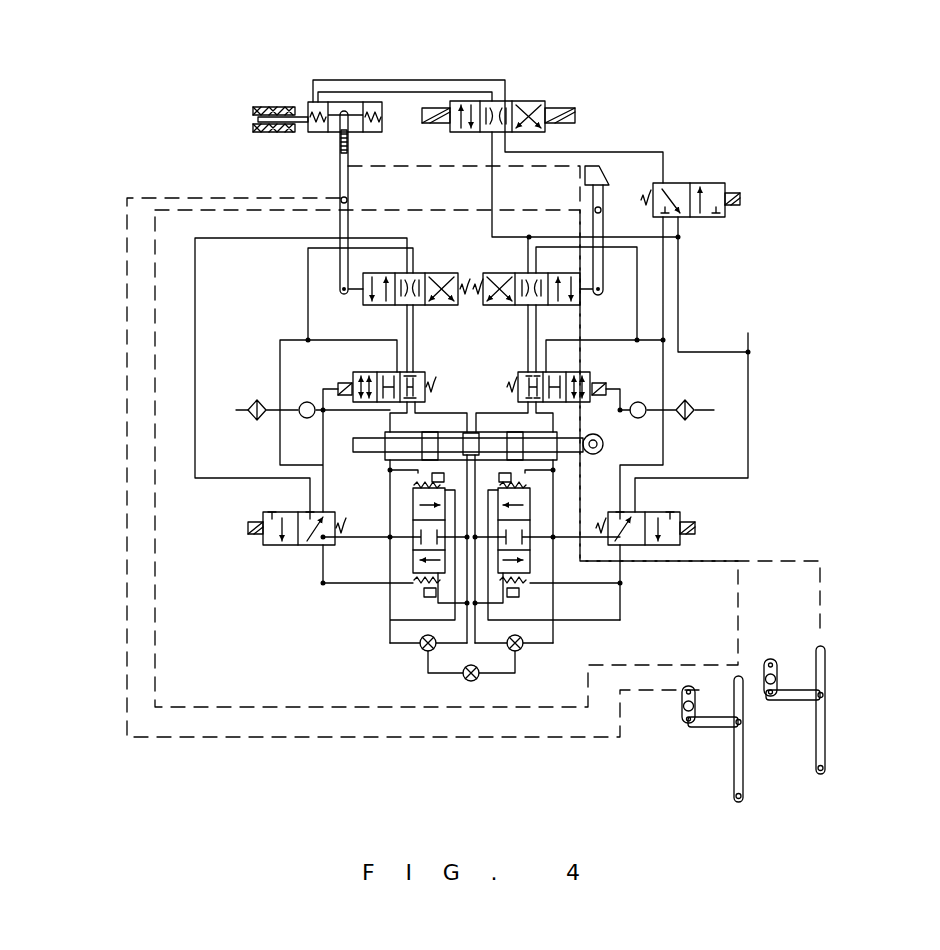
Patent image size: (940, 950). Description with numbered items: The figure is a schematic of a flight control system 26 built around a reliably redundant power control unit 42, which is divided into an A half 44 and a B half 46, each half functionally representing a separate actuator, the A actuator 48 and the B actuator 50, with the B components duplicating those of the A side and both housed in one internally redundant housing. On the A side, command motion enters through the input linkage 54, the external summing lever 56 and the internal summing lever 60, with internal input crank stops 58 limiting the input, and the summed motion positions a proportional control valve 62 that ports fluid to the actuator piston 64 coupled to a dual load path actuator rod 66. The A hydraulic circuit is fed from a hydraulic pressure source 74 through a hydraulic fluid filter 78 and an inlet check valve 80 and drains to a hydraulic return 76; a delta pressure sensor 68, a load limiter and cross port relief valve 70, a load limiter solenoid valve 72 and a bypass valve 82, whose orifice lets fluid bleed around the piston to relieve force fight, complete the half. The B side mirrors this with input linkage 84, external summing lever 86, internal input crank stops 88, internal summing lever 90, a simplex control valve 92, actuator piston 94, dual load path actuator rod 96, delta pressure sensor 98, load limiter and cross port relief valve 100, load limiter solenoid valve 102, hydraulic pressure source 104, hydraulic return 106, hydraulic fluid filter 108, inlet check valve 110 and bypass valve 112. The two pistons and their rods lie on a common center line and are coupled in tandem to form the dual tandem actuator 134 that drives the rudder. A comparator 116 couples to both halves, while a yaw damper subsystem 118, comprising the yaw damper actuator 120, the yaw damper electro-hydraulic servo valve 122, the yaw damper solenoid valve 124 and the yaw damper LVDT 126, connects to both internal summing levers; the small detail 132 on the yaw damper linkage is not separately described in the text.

The hydraulic control system 26 is at (227, 777).
The reliably redundant power control unit 42 is at (157, 757).
The A half 44 is at (117, 685).
The B half 46 is at (840, 648).
The A actuator 48 is at (373, 485).
The B actuator 50 is at (556, 462).
The input linkage 54 is at (710, 730).
The external summing lever 56 is at (733, 762).
The internal input crank stops 58 is at (688, 685).
The internal summing lever 60 is at (340, 225).
The proportional control valve 62 is at (362, 300).
The actuator piston 64 is at (415, 462).
The dual load path actuator rod 66 is at (400, 428).
The delta pressure sensor 68 is at (421, 648).
The load limiter and cross port relief valve 70 is at (413, 562).
The load limiter solenoid valve 72 is at (263, 543).
The hydraulic pressure source 74 is at (222, 393).
The hydraulic return 76 is at (182, 325).
The hydraulic fluid filter 78 is at (258, 398).
The inlet check valve 80 is at (303, 416).
The bypass valve 82 is at (363, 370).
The input linkage 84 is at (795, 702).
The external summing lever 86 is at (827, 745).
The internal input crank stops 88 is at (767, 665).
The internal summing lever 90 is at (603, 250).
The simplex control valve 92 is at (680, 360).
The actuator piston 94 is at (590, 434).
The dual load path actuator rod 96 is at (482, 428).
The delta pressure sensor 98 is at (520, 651).
The load limiter and cross port relief valve 100 is at (535, 575).
The load limiter solenoid valve 102 is at (682, 545).
The hydraulic pressure source 104 is at (738, 413).
The hydraulic return 106 is at (777, 322).
The hydraulic fluid filter 108 is at (683, 422).
The inlet check valve 110 is at (637, 401).
The bypass valve 112 is at (595, 372).
The comparator 116 is at (470, 681).
The yaw damper subsystem 118 is at (600, 116).
The yaw damper actuator 120 is at (363, 102).
The yaw damper electro-hydraulic servo valve 122 is at (528, 101).
The yaw damper solenoid valve 124 is at (725, 185).
The yaw damper LVDT 126 is at (277, 106).
The detent 132 is at (343, 148).
The dual tandem actuator 134 is at (452, 407).